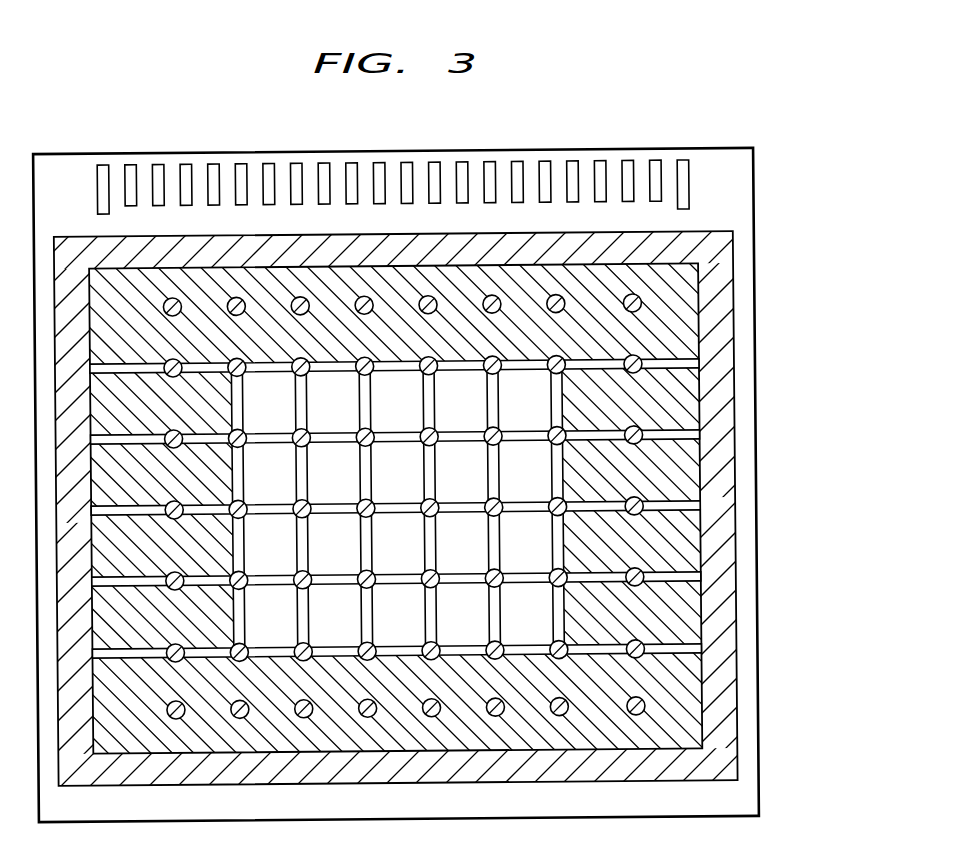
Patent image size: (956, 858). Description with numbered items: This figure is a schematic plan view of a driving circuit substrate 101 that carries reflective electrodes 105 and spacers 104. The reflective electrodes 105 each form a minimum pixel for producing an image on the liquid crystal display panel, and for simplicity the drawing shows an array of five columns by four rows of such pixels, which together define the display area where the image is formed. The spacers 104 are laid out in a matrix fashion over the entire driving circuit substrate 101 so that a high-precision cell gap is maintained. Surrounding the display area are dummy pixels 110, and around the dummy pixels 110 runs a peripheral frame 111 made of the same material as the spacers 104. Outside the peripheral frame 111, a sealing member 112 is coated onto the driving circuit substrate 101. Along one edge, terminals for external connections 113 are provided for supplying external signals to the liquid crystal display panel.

The driving circuit substrate 101 is at (767, 283).
The spacers 104 is at (563, 437).
The reflective electrodes 105 is at (528, 538).
The dummy pixels 110 is at (645, 613).
The peripheral frame 111 is at (713, 670).
The sealing member 112 is at (747, 722).
The terminals for external connections 113 is at (683, 173).